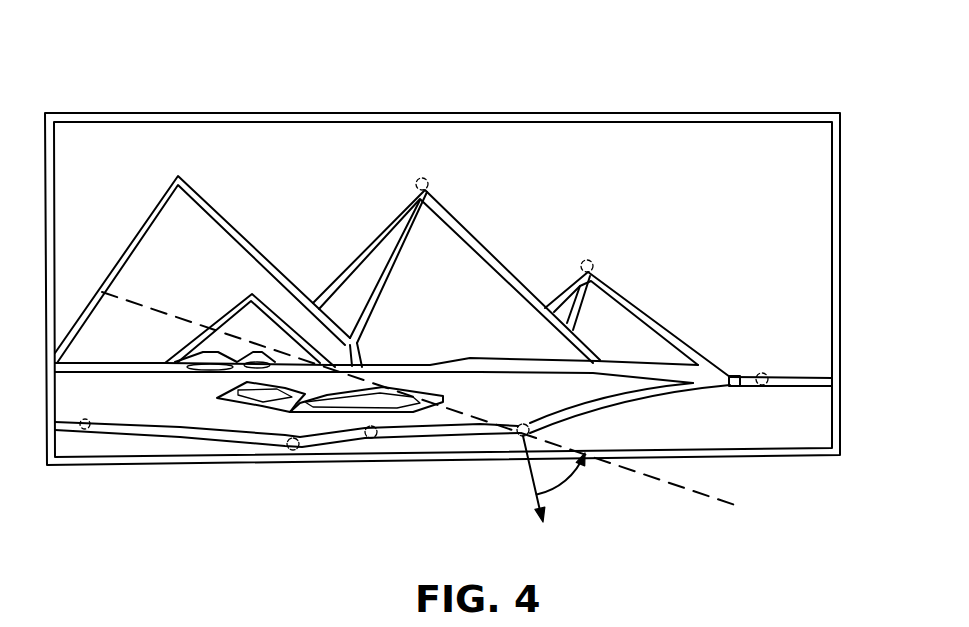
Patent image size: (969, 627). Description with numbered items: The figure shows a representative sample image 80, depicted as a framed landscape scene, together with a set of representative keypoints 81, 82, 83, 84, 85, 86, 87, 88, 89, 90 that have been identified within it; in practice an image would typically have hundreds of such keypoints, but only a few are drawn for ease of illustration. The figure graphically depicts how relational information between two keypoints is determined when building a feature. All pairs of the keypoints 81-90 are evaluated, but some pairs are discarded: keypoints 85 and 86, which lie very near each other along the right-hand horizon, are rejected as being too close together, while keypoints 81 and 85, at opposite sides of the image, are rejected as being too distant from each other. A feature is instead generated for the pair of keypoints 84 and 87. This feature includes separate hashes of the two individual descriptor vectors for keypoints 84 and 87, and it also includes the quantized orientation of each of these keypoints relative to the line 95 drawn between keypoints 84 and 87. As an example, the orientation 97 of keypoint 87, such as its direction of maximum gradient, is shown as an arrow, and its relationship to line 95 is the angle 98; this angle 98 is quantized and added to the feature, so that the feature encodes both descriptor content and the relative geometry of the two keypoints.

The sample image 80 is at (737, 148).
The keypoint 81 is at (83, 422).
The keypoint 82 is at (422, 183).
The keypoint 83 is at (357, 341).
The keypoint 84 is at (447, 409).
The keypoint 85 is at (762, 377).
The keypoint 86 is at (742, 387).
The keypoint 87 is at (537, 424).
The keypoint 88 is at (589, 264).
The keypoint 89 is at (296, 452).
The keypoint 90 is at (372, 445).
The line between keypoints 95 is at (177, 313).
The orientation of keypoint 97 is at (529, 470).
The angle 98 is at (564, 490).